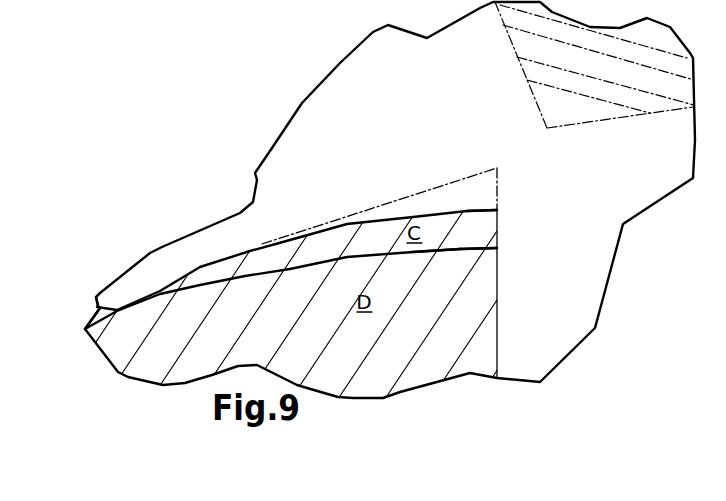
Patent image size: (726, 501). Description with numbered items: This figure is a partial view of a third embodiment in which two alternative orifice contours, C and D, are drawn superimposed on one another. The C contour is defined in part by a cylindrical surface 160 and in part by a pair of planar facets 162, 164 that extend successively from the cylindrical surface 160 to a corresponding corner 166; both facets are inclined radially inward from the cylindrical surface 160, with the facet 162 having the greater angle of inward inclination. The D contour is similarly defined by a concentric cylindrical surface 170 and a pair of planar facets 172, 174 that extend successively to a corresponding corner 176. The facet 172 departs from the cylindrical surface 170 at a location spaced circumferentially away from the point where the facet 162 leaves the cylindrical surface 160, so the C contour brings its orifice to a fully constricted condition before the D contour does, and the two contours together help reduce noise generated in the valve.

The cylindrical surface 160 is at (195, 270).
The planar facet 162 is at (350, 223).
The planar facet 164 is at (440, 211).
The corner 166 is at (497, 210).
The cylindrical surface 170 is at (115, 309).
The planar facet 172 is at (285, 272).
The planar facet 174 is at (463, 249).
The corner 176 is at (497, 248).